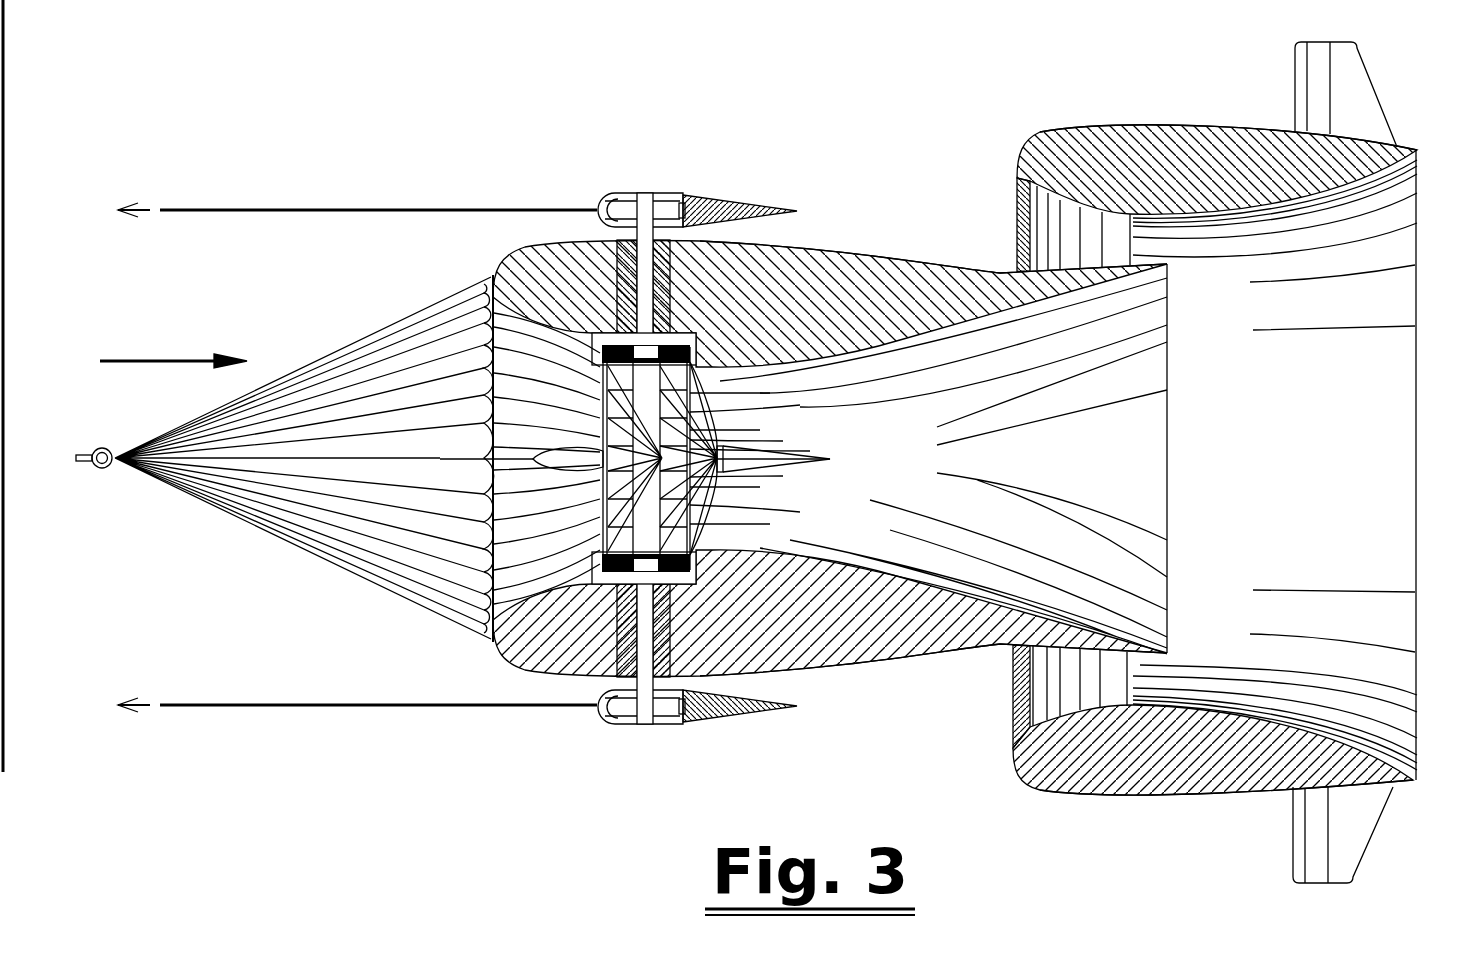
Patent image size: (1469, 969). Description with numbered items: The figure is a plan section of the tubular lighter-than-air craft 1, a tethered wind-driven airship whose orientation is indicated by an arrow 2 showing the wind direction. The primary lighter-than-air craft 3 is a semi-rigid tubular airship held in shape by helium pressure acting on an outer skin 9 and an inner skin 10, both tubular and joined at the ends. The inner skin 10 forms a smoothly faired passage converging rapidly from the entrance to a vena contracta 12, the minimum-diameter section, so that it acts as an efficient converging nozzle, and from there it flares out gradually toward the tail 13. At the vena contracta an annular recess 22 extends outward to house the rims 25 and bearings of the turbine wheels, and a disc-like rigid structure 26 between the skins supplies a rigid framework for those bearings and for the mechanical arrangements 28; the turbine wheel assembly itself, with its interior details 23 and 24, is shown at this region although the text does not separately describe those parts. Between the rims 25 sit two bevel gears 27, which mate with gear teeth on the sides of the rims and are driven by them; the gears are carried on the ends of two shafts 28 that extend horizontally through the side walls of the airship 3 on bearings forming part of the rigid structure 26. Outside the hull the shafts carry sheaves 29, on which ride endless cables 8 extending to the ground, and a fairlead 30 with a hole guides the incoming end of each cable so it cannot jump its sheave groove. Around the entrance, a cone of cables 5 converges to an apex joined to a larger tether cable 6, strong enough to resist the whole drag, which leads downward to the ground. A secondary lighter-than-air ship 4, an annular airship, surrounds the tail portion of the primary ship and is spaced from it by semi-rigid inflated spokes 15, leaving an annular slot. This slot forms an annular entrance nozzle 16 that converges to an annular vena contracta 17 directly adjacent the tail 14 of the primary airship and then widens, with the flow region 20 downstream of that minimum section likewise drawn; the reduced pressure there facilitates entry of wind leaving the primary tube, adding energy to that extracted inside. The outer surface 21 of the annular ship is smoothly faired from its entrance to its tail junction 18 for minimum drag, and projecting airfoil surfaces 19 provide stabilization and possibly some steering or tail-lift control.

The tubular lighter-than-air craft 1 is at (893, 728).
The arrow 2 is at (152, 361).
The primary lighter-than-air craft 3 is at (834, 319).
The secondary lighter-than-air ship 4 is at (1117, 125).
The cone of cables 5 is at (410, 322).
The tether cable 6 is at (100, 447).
The endless cables 8 is at (320, 210).
The outer skin 9 is at (995, 272).
The inner skin 10 is at (943, 337).
The vena contracta 12 is at (688, 316).
The tail 13 is at (1100, 270).
The tail of the primary airship 14 is at (1170, 266).
The semi-rigid spokes 15 is at (1012, 207).
The annular entrance nozzle 16 is at (1058, 203).
The annular vena contracta 17 is at (1155, 245).
The tail junction of the annular airship 18 is at (1373, 170).
The projecting airfoil surfaces 19 is at (1378, 90).
The wing flow line 20 is at (1243, 213).
The outer surface of the annular airship 21 is at (1282, 125).
The annular recess 22 is at (708, 362).
The fan rotor 23 is at (600, 530).
The hub tail cone 24 is at (700, 528).
The rims of the turbine wheels 25 is at (740, 548).
The disc-like rigid structure 26 is at (643, 300).
The bevel gears 27 is at (598, 552).
The shafts 28 is at (618, 265).
The sheaves 29 is at (630, 193).
The fairlead 30 is at (597, 207).